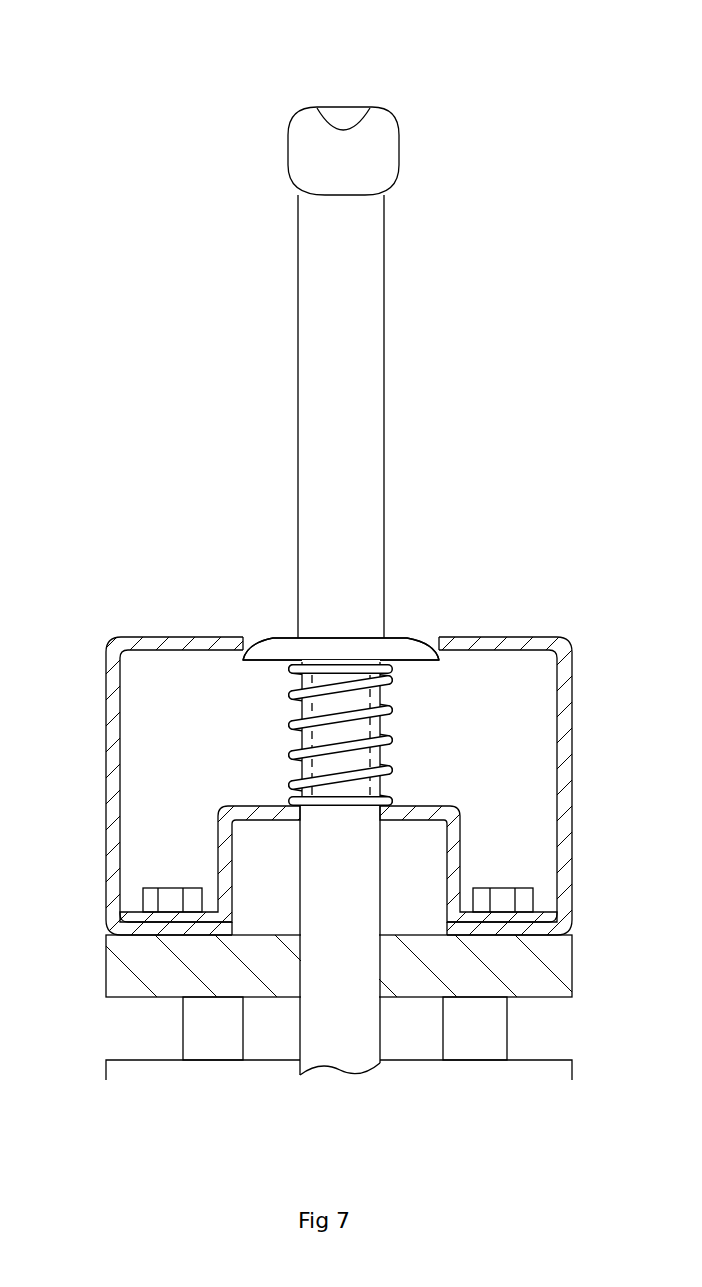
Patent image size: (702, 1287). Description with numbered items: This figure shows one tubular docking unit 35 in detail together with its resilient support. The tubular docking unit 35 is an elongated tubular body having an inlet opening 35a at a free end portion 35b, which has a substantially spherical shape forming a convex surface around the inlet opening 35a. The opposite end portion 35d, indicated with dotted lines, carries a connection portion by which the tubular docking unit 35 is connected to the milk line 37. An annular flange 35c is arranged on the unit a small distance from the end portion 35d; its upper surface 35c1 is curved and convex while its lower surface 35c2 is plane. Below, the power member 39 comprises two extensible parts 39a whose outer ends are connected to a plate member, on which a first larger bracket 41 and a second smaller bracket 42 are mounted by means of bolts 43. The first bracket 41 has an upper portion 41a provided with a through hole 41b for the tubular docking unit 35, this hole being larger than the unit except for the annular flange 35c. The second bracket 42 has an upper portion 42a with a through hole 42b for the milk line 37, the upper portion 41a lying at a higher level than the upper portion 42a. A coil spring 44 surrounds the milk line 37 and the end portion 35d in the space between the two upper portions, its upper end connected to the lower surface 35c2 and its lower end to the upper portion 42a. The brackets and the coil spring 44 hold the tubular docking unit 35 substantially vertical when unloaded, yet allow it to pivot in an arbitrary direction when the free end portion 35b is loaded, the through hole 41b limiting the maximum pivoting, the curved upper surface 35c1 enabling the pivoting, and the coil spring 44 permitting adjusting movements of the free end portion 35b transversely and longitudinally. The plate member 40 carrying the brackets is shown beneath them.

The tubular docking unit 35 is at (320, 370).
The inlet opening 35a is at (338, 117).
The free end portion 35b is at (302, 146).
The annular flange 35c is at (400, 648).
The upper surface of annular flange 35c1 is at (263, 638).
The lower surface of annular flange 35c2 is at (287, 657).
The end portion 35d is at (357, 697).
The milk line 37 is at (358, 1040).
The power member 39 is at (261, 1116).
The extensible parts 39a is at (200, 1020).
The mounting plate 40 is at (162, 965).
The first bracket 41 is at (115, 750).
The upper portion of first bracket 41a is at (167, 638).
The through hole 41b is at (438, 638).
The second bracket 42 is at (453, 815).
The upper portion of second bracket 42a is at (247, 808).
The through hole 42b is at (397, 805).
The bolts 43 is at (168, 898).
The coil spring 44 is at (341, 733).